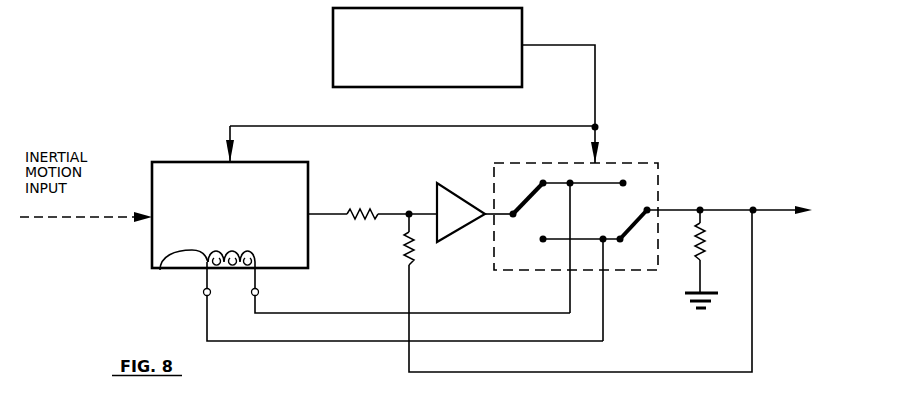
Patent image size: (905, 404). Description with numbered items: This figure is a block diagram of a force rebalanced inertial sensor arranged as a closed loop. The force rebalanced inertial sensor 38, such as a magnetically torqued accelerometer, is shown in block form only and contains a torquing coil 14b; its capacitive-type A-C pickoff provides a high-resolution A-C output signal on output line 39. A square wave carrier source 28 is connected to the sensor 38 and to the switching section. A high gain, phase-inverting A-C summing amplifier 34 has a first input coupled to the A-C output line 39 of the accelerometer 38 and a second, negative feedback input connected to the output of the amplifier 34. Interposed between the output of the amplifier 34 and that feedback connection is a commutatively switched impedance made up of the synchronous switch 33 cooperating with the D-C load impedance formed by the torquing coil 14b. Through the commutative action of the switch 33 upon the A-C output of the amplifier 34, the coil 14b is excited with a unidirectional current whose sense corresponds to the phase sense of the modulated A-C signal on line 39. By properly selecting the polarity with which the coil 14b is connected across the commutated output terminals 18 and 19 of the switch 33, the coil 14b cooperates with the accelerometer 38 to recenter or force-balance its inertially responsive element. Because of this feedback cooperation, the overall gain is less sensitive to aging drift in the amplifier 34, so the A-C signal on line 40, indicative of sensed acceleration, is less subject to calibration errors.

The square wave carrier source 28 is at (349, 66).
The force rebalanced inertial sensor 38 is at (171, 173).
The torquing coil 14b is at (160, 270).
The output line 39 is at (321, 215).
The amplifier 34 is at (446, 192).
The synchronous switch 33 is at (651, 180).
The commutated output terminal 18 is at (571, 186).
The commutated output terminal 19 is at (604, 243).
The line 40 is at (775, 209).